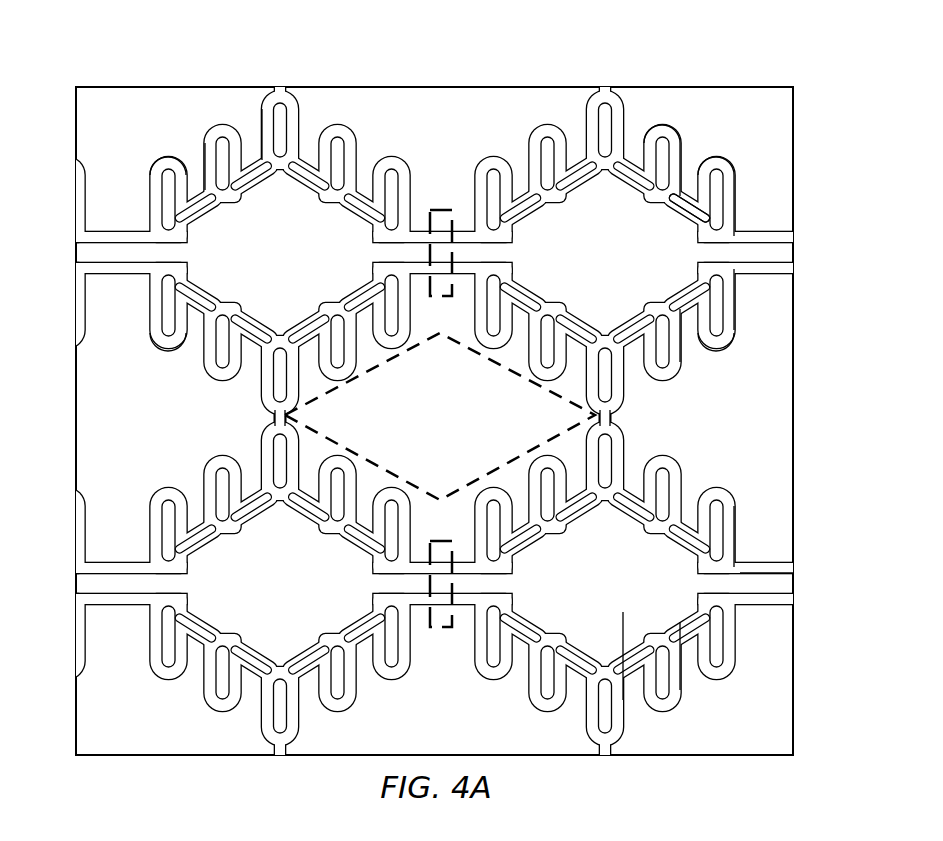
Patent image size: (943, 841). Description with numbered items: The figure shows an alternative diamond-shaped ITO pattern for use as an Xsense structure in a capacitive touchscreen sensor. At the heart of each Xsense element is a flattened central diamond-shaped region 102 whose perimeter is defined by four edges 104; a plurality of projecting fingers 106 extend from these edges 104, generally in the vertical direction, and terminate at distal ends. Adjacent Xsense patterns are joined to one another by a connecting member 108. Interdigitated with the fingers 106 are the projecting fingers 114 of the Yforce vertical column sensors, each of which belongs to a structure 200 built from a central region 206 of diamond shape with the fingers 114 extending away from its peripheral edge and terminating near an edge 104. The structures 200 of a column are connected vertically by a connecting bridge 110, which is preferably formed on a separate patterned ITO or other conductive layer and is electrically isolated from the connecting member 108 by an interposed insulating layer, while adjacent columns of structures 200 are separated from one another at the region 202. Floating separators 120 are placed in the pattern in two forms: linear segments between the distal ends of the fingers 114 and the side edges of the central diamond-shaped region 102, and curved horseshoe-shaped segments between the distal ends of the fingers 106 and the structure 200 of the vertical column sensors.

The central diamond-shaped region 102 is at (622, 268).
The edge 104 is at (683, 205).
The projecting finger 106 is at (720, 192).
The connecting member 108 is at (775, 575).
The connecting bridge 110 is at (440, 210).
The projecting finger 114 is at (203, 155).
The floating separator 120 is at (150, 187).
The structure 200 is at (460, 428).
The region 202 is at (272, 418).
The central region 206 is at (547, 408).